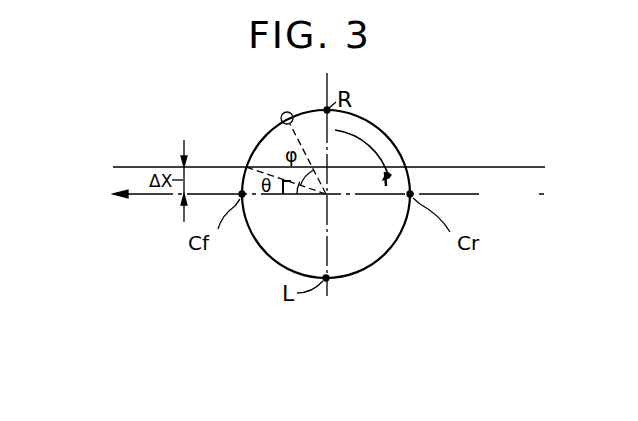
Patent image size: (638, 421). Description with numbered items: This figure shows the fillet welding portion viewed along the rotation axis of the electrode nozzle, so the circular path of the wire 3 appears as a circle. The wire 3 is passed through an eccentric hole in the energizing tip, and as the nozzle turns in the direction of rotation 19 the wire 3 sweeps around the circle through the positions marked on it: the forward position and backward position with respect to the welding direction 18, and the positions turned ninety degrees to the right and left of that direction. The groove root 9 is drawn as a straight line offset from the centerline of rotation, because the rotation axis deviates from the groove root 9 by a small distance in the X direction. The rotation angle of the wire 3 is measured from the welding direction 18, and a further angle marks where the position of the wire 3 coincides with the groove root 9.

The wire 3 is at (283, 114).
The root of a groove 9 is at (493, 164).
The welding direction 18 is at (160, 198).
The direction of rotation of the wire 19 is at (378, 150).